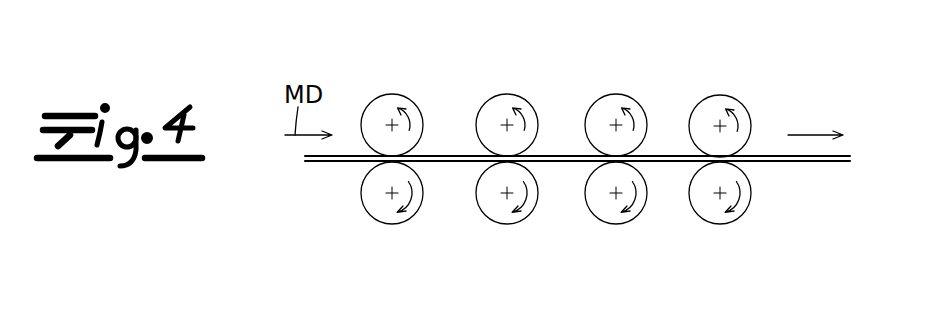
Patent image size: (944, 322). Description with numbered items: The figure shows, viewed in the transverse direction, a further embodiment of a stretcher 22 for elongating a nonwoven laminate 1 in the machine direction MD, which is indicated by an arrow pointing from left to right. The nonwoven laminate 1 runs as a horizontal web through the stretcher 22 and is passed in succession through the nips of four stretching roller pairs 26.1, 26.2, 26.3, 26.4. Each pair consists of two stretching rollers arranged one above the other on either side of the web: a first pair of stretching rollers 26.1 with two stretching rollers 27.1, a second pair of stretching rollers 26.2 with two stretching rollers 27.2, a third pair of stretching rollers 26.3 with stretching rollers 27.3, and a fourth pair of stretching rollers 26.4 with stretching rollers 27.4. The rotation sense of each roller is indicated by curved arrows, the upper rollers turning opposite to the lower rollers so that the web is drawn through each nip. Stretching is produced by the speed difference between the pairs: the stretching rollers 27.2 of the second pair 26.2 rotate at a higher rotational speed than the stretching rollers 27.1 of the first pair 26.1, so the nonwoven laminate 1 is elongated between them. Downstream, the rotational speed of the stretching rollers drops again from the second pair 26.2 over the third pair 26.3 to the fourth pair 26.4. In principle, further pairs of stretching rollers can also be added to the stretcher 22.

The nonwoven laminate 1 is at (323, 162).
The stretcher 22 is at (712, 61).
The first pair of stretching rollers 26.1 is at (412, 82).
The second pair of stretching rollers 26.2 is at (533, 80).
The third pair of stretching rollers 26.3 is at (637, 80).
The fourth pair of stretching rollers 26.4 is at (755, 91).
The stretching rollers of the first pair 27.1 is at (372, 142).
The stretching rollers of the second pair 27.2 is at (487, 142).
The stretching rollers of the third pair 27.3 is at (596, 142).
The stretching rollers of the fourth pair 27.4 is at (700, 142).